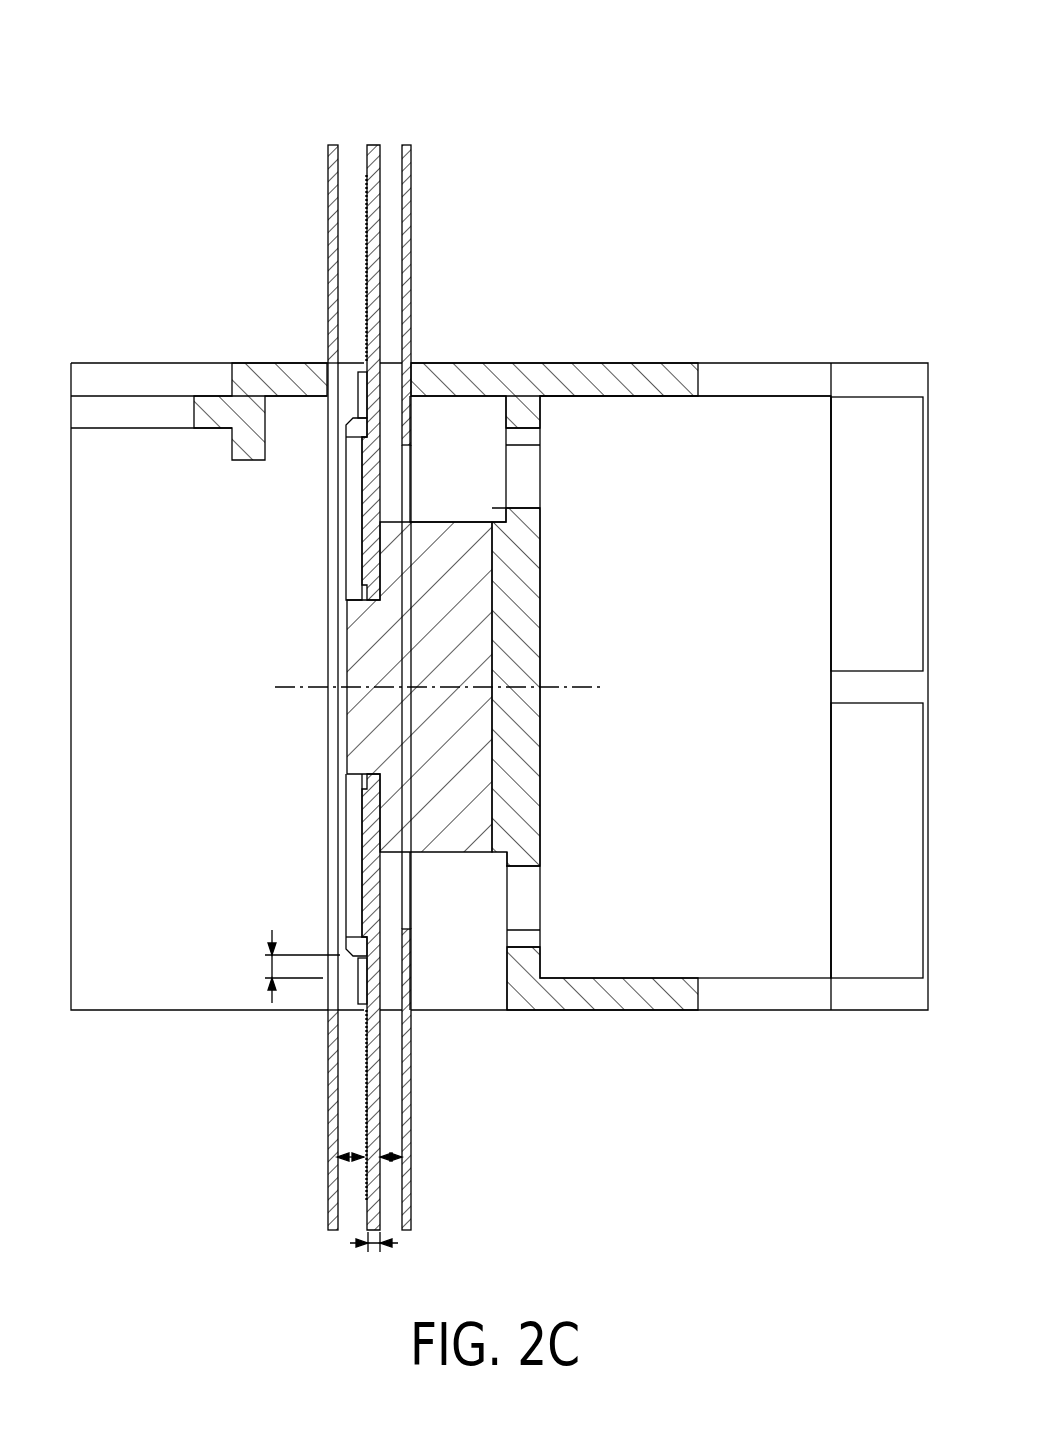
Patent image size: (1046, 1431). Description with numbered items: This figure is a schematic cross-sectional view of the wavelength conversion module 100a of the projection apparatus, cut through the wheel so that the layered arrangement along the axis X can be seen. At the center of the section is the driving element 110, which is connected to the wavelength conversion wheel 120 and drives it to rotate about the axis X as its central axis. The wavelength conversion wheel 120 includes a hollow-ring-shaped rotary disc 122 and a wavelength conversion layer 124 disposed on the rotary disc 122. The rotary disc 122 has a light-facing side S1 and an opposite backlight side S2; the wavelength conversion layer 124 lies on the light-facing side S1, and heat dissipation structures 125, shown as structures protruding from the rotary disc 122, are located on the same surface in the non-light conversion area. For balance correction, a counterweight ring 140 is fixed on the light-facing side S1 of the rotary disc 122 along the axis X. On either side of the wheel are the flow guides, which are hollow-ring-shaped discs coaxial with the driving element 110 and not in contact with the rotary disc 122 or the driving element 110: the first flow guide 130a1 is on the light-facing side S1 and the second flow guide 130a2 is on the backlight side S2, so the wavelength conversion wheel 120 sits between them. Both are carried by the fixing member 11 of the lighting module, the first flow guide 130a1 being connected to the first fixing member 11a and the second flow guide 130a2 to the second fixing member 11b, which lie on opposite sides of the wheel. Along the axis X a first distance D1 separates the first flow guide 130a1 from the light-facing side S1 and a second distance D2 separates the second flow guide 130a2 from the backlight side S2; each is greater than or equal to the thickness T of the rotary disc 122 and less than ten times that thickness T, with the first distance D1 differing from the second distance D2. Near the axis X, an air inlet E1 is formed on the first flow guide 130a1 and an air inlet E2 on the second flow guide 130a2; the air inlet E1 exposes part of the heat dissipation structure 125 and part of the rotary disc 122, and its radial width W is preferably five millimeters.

The wavelength conversion module 100a is at (518, 72).
The fixing member 11 is at (499, 655).
The first fixing member 11a is at (247, 378).
The second fixing member 11b is at (462, 378).
The driving element 110 is at (463, 605).
The wavelength conversion wheel 120 is at (413, 43).
The rotary disc 122 is at (374, 147).
The wavelength conversion layer 124 is at (365, 178).
The heat dissipation structure 125 is at (360, 390).
The first flow guide 130a1 is at (336, 172).
The second flow guide 130a2 is at (407, 165).
The counterweight ring 140 is at (353, 535).
The air inlet E1 is at (349, 407).
The air inlet E2 is at (388, 453).
The axis X is at (425, 688).
The width W is at (291, 966).
The first distance D1 is at (350, 1155).
The second distance D2 is at (395, 1155).
The light-facing side S1 is at (368, 1215).
The backlight side S2 is at (382, 1178).
The thickness T is at (374, 1259).